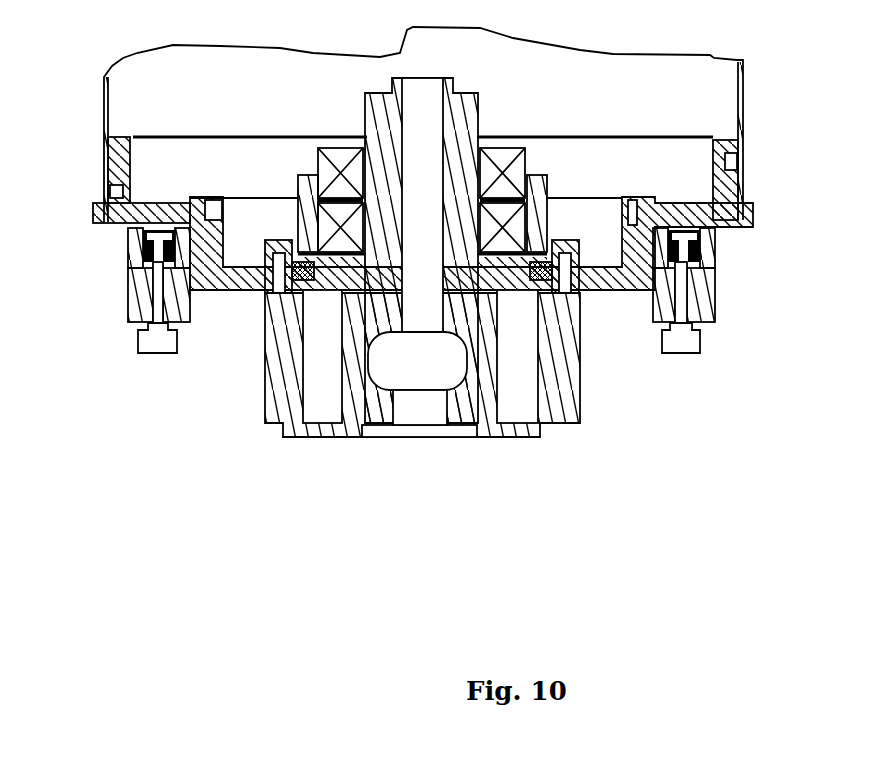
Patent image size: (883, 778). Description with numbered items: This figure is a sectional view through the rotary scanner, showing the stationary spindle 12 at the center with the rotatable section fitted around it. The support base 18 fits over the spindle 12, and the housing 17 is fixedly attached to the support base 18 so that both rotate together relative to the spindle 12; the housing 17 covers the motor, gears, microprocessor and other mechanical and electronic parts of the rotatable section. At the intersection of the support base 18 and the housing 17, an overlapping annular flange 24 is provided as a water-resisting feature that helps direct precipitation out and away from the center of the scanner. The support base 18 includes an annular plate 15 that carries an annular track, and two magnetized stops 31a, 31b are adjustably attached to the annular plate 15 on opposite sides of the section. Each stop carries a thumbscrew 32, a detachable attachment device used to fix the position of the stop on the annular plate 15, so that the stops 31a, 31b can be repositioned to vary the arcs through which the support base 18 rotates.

The spindle 12 is at (273, 380).
The annular plate 15 is at (602, 290).
The housing 17 is at (743, 88).
The support base 18 is at (740, 167).
The overlapping annular flange 24 is at (92, 213).
The stop 31a is at (718, 266).
The stop 31b is at (130, 266).
The thumbscrew 32 is at (683, 352).